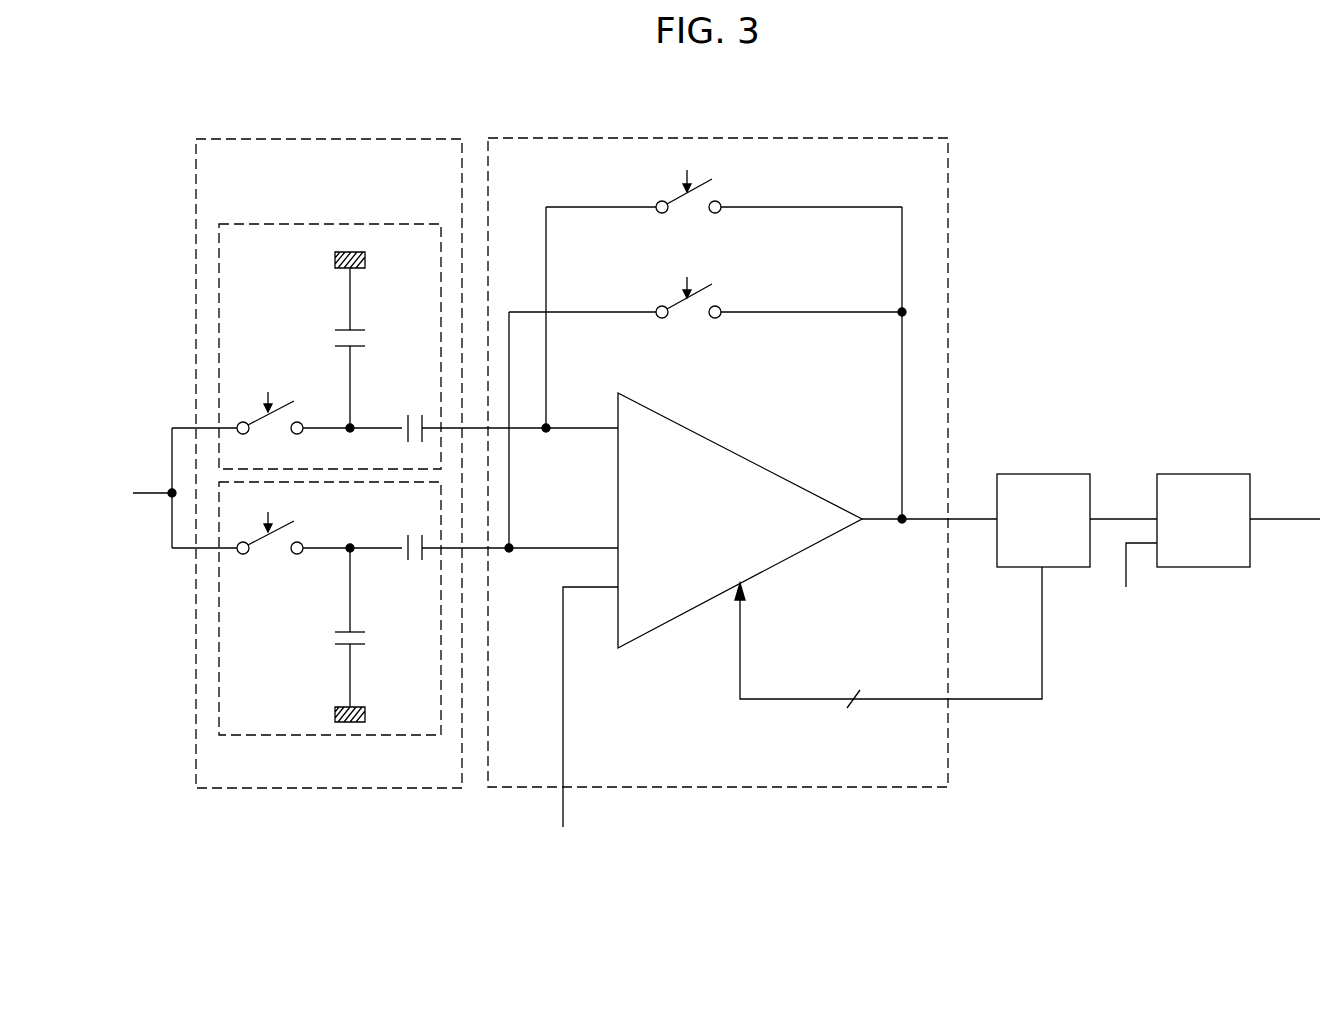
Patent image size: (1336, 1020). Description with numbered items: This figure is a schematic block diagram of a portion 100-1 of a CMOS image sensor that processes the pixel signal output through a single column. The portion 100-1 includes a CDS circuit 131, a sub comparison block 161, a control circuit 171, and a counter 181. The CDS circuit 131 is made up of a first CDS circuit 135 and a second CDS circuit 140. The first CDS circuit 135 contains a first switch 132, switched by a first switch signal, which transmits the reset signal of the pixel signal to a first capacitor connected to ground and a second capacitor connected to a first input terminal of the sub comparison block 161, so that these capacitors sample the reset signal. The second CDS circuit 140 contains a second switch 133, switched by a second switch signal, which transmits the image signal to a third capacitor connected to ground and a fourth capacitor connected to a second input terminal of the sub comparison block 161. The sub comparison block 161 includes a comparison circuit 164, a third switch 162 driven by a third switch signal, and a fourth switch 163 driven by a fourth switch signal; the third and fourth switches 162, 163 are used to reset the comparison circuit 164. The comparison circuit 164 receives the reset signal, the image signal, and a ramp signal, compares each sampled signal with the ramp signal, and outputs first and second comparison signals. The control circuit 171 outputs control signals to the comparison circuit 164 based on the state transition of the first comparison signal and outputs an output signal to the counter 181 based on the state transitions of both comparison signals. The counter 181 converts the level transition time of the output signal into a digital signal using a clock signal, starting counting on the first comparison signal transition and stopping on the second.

The portion of the CMOS image sensor 100-1 is at (1210, 99).
The CDS circuit 131 is at (390, 139).
The first CDS circuit 135 is at (365, 224).
The second CDS circuit 140 is at (388, 735).
The first switch 132 is at (271, 422).
The second switch 133 is at (271, 542).
The sub comparison block 161 is at (840, 138).
The third switch 162 is at (690, 202).
The fourth switch 163 is at (690, 307).
The comparison circuit 164 is at (740, 456).
The control circuit 171 is at (1080, 474).
The counter 181 is at (1240, 474).